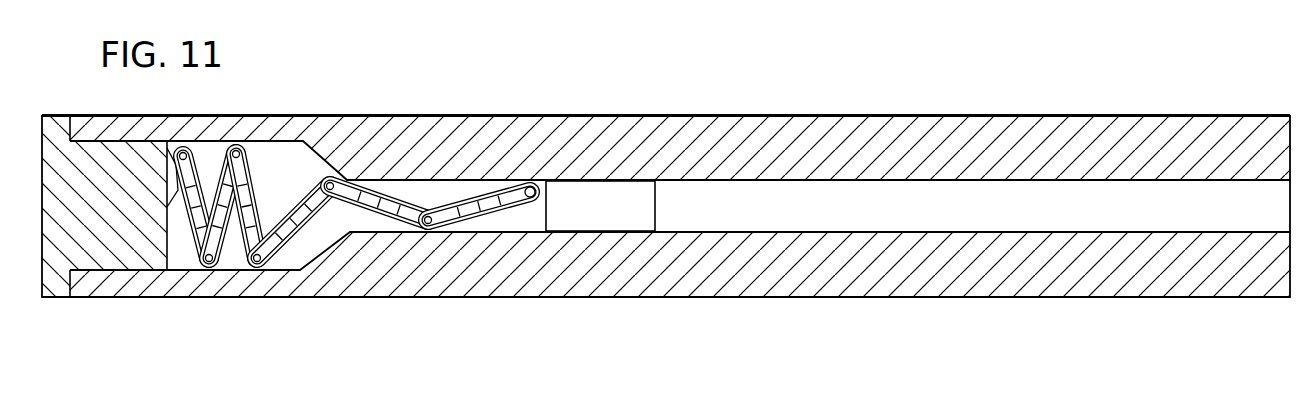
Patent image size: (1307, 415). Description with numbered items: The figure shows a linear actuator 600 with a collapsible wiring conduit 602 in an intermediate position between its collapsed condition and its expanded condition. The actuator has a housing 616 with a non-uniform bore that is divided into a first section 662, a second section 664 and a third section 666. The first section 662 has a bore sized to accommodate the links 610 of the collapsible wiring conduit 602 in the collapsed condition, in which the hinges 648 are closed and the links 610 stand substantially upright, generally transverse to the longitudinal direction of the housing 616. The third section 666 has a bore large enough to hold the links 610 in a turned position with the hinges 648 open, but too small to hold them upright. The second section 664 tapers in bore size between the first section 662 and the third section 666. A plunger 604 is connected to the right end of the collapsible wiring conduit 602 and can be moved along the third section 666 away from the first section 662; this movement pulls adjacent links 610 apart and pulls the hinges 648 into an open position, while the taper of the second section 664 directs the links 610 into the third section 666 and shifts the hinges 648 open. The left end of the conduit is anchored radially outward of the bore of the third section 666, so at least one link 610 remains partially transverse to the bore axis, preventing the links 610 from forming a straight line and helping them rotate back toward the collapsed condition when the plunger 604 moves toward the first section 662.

The linear actuator 600 is at (666, 161).
The collapsible wiring conduit 602 is at (370, 92).
The plunger 604 is at (628, 200).
The links 610 is at (358, 157).
The housing 616 is at (554, 115).
The hinges 648 is at (437, 205).
The first section 662 is at (302, 315).
The second section 664 is at (352, 315).
The third section 666 is at (1292, 315).